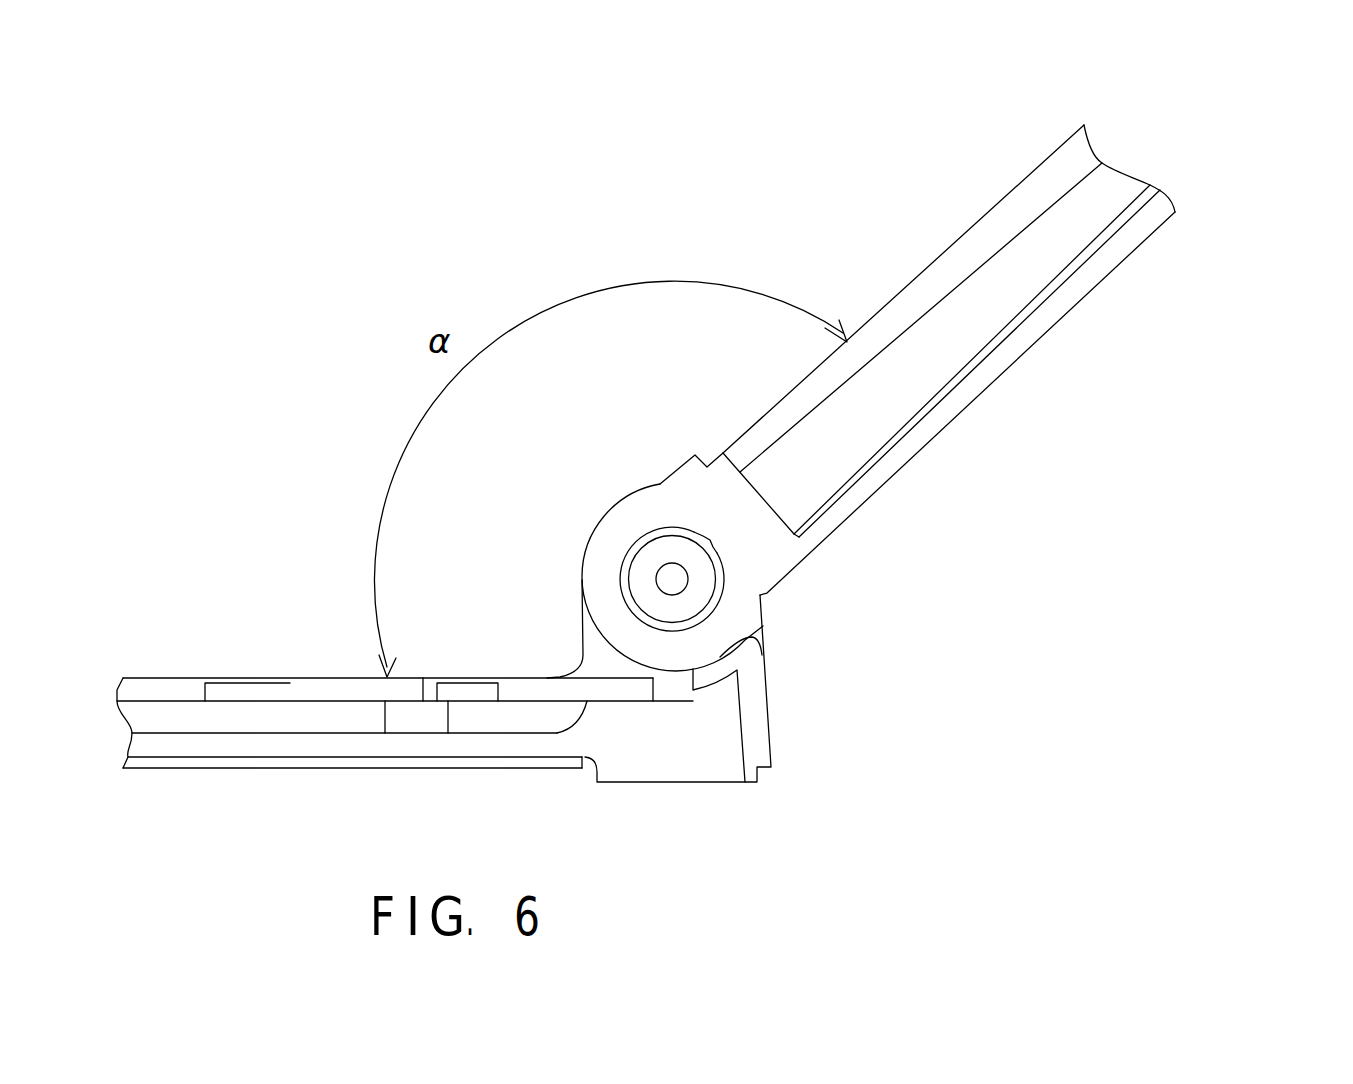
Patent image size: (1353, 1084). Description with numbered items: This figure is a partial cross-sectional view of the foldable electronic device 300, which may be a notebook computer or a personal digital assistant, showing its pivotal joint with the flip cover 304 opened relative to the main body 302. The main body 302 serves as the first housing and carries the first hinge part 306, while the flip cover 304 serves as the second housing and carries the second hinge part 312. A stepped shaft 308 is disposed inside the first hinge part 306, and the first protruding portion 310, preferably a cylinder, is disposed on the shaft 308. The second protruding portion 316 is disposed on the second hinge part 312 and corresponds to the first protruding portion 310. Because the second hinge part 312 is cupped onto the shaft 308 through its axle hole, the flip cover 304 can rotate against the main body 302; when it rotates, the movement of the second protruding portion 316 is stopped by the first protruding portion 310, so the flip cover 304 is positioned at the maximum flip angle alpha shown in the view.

The foldable electronic device 300 is at (1292, 146).
The main body 302 is at (300, 701).
The flip cover 304 is at (920, 308).
The first hinge part 306 is at (592, 657).
The shaft 308 is at (650, 557).
The first protruding portion 310 is at (718, 550).
The second hinge part 312 is at (697, 643).
The second protruding portion 316 is at (696, 531).